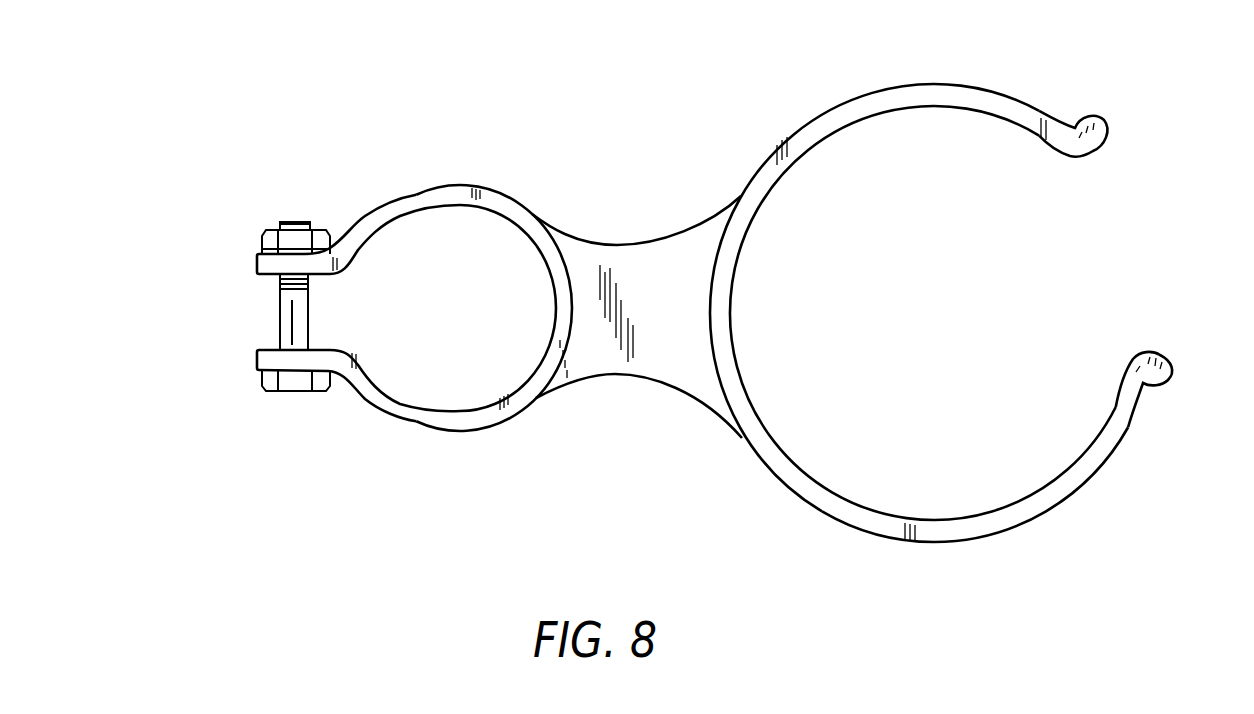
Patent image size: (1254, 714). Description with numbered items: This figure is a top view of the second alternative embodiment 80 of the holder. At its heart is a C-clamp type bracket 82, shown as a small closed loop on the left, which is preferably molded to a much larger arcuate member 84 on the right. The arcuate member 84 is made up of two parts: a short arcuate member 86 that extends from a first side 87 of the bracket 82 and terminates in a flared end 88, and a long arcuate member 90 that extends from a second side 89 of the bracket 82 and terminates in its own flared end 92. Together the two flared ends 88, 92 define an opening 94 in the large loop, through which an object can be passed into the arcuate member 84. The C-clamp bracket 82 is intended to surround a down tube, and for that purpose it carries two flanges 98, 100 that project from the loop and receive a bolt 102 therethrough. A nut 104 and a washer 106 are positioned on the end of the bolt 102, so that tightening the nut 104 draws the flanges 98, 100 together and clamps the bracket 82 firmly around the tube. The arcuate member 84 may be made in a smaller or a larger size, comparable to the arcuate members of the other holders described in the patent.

The second alternative embodiment 80 is at (640, 145).
The C-clamp type bracket 82 is at (386, 440).
The arcuate member 84 is at (735, 483).
The short arcuate member 86 is at (812, 123).
The first side 87 is at (617, 244).
The flared end 88 is at (1107, 123).
The second side 89 is at (638, 381).
The long arcuate member 90 is at (943, 541).
The flared end 92 is at (1176, 360).
The opening 94 is at (1118, 231).
The flange 98 is at (258, 264).
The flange 100 is at (258, 353).
The bolt 102 is at (277, 390).
The nut 104 is at (272, 226).
The washer 106 is at (262, 250).